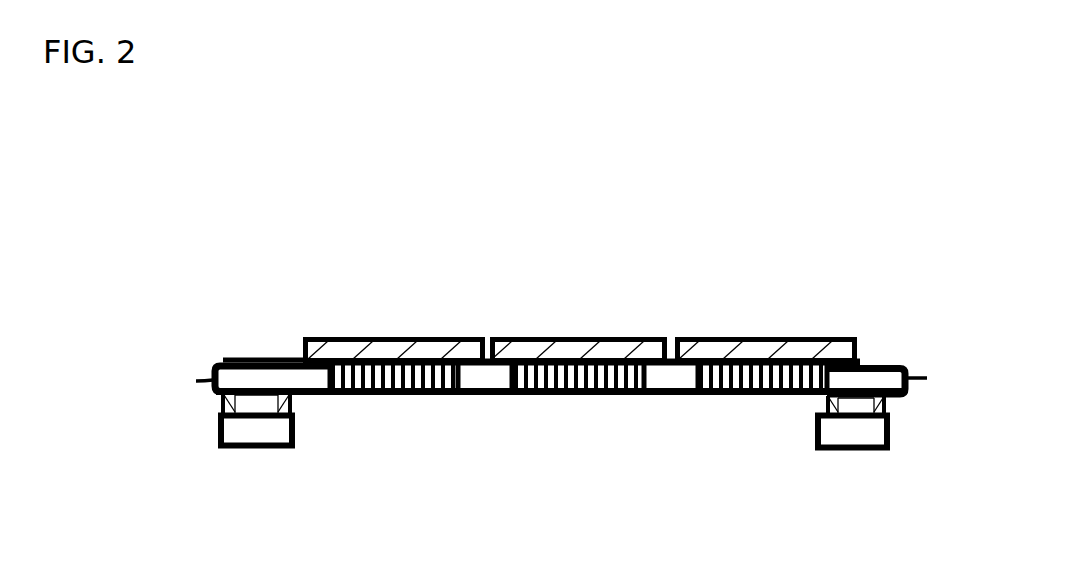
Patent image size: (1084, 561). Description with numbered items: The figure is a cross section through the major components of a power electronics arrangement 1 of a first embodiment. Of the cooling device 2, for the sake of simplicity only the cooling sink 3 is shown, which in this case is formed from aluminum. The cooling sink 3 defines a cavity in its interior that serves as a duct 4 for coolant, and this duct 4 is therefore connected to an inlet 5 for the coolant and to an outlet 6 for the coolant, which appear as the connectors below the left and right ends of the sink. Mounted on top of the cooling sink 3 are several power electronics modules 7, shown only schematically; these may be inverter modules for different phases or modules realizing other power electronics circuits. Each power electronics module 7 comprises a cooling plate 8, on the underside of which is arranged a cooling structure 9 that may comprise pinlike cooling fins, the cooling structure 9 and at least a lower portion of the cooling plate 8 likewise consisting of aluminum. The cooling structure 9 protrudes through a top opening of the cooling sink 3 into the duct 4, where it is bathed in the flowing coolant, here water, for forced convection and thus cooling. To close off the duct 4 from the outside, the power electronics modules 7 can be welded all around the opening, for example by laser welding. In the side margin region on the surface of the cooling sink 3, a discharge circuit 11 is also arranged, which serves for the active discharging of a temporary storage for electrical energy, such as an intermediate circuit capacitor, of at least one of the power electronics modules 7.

The power electronics arrangement 1 is at (879, 264).
The cooling device 2 is at (214, 400).
The cooling sink 3 is at (215, 391).
The duct 4 is at (479, 383).
The inlet 5 is at (257, 436).
The outlet 6 is at (851, 434).
The power electronics module 7 is at (380, 338).
The cooling plate 8 is at (419, 359).
The cooling structure 9 is at (412, 399).
The discharge circuit 11 is at (230, 359).